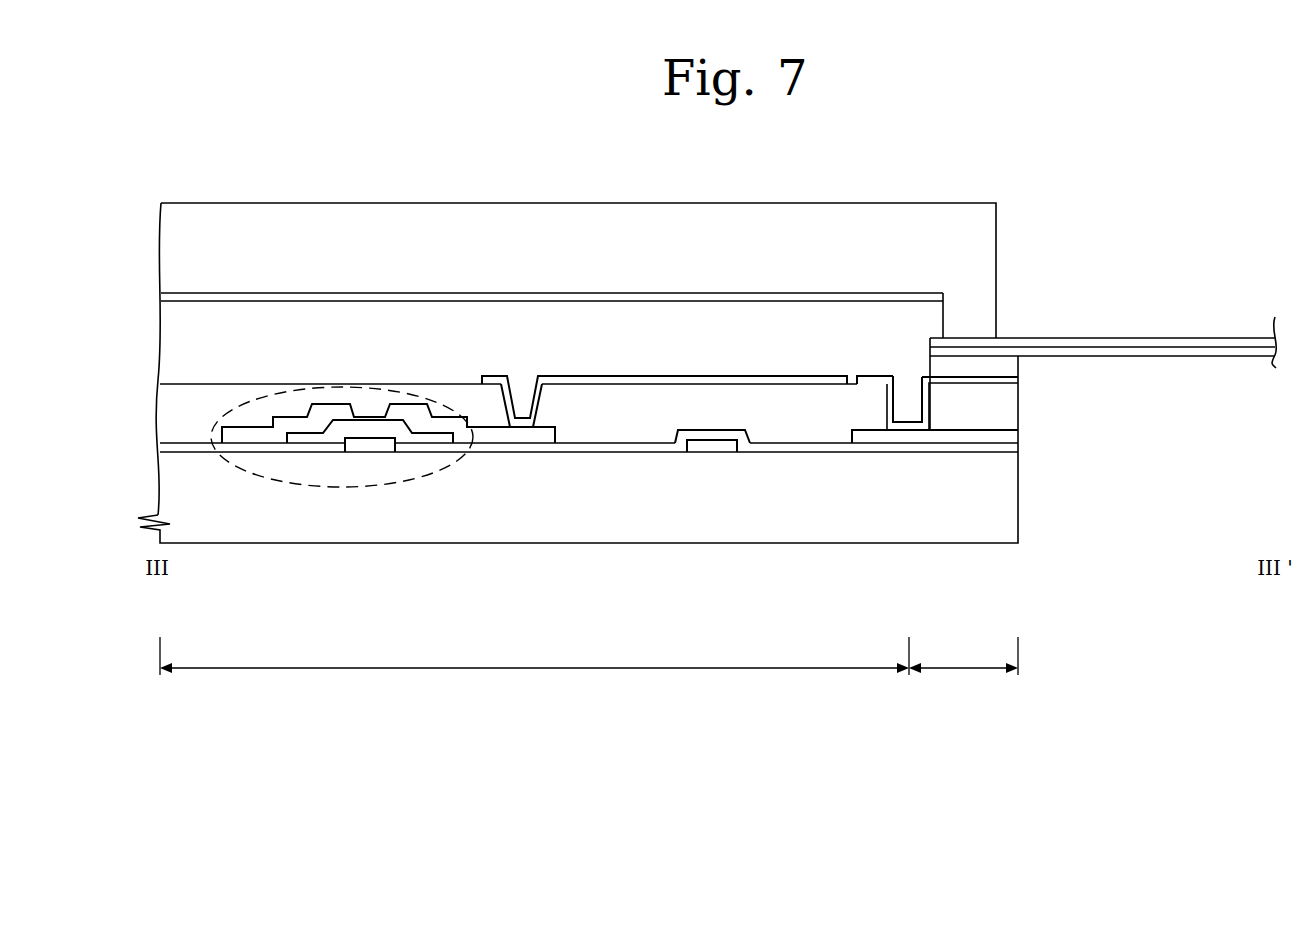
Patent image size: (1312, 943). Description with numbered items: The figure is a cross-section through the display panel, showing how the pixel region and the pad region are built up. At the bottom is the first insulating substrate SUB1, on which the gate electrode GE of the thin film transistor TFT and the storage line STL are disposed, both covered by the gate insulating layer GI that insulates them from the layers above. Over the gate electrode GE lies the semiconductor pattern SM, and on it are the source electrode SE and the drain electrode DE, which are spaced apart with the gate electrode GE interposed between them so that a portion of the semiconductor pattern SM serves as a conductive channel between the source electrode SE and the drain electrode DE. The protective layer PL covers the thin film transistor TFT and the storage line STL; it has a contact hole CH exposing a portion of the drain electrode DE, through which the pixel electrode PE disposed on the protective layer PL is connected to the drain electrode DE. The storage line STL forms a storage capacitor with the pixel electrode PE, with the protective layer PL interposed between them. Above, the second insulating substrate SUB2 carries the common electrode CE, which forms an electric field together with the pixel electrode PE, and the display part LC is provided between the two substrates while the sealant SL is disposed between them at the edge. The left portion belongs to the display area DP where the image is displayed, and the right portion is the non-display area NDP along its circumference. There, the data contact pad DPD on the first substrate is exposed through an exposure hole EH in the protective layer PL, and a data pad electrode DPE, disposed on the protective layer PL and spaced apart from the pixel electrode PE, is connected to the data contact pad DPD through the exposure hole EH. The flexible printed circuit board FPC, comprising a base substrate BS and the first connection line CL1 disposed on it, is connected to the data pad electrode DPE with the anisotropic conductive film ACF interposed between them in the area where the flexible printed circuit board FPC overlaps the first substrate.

The second insulating substrate SUB2 is at (168, 250).
The common electrode CE is at (168, 296).
The display part LC is at (168, 341).
The protective layer PL is at (168, 411).
The gate insulating layer GI is at (168, 446).
The first insulating substrate SUB1 is at (168, 486).
The source electrode SE is at (255, 438).
The semiconductor pattern SM is at (320, 437).
The gate electrode GE is at (370, 448).
The thin film transistor TFT is at (402, 482).
The drain electrode DE is at (478, 437).
The contact hole CH is at (520, 376).
The pixel electrode PE is at (606, 380).
The storage line STL is at (713, 446).
The exposure hole EH is at (905, 378).
The data contact pad DPD is at (913, 436).
The sealant SL is at (985, 317).
The anisotropic conductive film ACF is at (1007, 366).
The data pad electrode DPE is at (1007, 380).
The flexible printed circuit board FPC is at (1103, 302).
The base substrate BS is at (1125, 343).
The first connection line CL1 is at (1117, 271).
The display area DP is at (534, 668).
The non-display area NDP is at (963, 668).